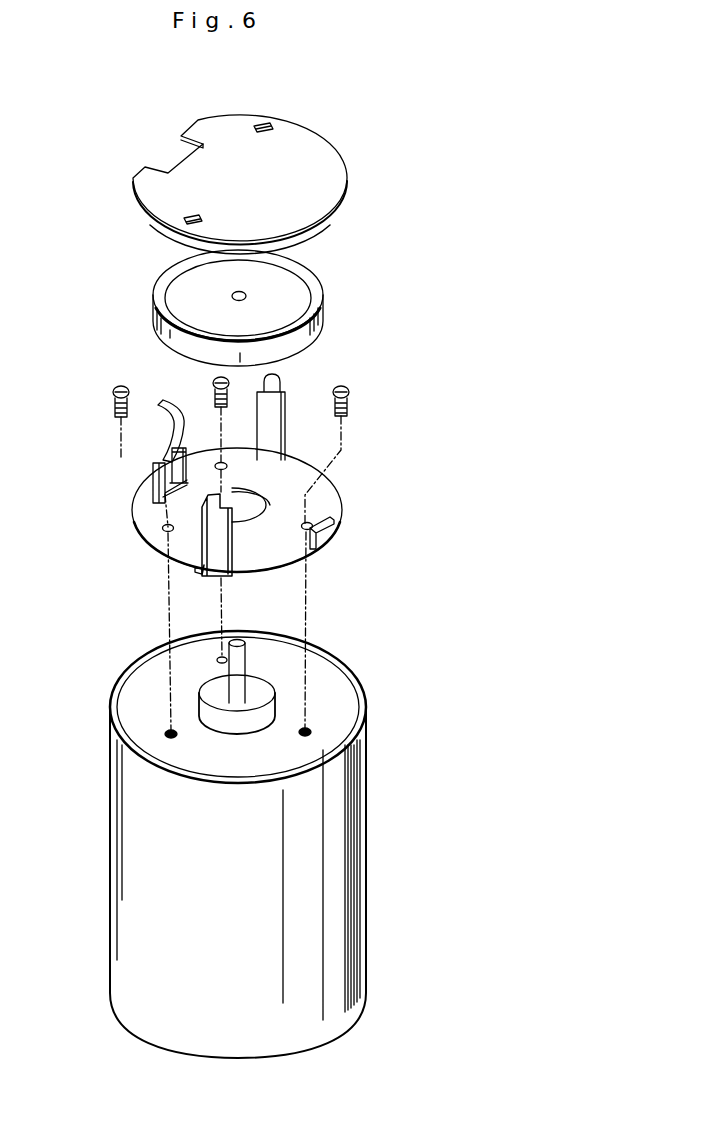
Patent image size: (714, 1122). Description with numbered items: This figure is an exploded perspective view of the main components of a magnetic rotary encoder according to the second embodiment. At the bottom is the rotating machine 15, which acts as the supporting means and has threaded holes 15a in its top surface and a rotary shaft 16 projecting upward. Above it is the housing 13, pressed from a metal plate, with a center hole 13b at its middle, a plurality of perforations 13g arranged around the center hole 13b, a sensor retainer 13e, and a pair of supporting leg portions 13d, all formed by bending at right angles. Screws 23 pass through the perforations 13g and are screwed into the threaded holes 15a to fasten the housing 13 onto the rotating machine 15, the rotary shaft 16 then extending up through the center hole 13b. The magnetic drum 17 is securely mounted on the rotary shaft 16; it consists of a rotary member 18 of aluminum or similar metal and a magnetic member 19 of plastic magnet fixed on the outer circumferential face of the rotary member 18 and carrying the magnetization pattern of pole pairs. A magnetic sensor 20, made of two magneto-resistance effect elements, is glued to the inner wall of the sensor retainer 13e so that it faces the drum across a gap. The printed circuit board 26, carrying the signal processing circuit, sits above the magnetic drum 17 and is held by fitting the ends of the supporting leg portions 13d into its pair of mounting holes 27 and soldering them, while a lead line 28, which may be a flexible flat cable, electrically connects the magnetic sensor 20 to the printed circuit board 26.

The housing 13 is at (237, 546).
The center hole 13b is at (253, 522).
The supporting leg portions 13d is at (272, 391).
The sensor retainer 13e is at (152, 470).
The perforations 13g is at (322, 518).
The rotating machine 15 is at (239, 837).
The threaded holes 15a is at (165, 735).
The rotary shaft 16 is at (245, 667).
The magnetic drum 17 is at (279, 308).
The rotary member 18 is at (293, 282).
The magnetic member 19 is at (317, 305).
The magnetic sensor 20 is at (150, 482).
The screws 23 is at (112, 397).
The printed circuit board 26 is at (318, 180).
The mounting holes 27 is at (267, 124).
The lead line 28 is at (168, 404).